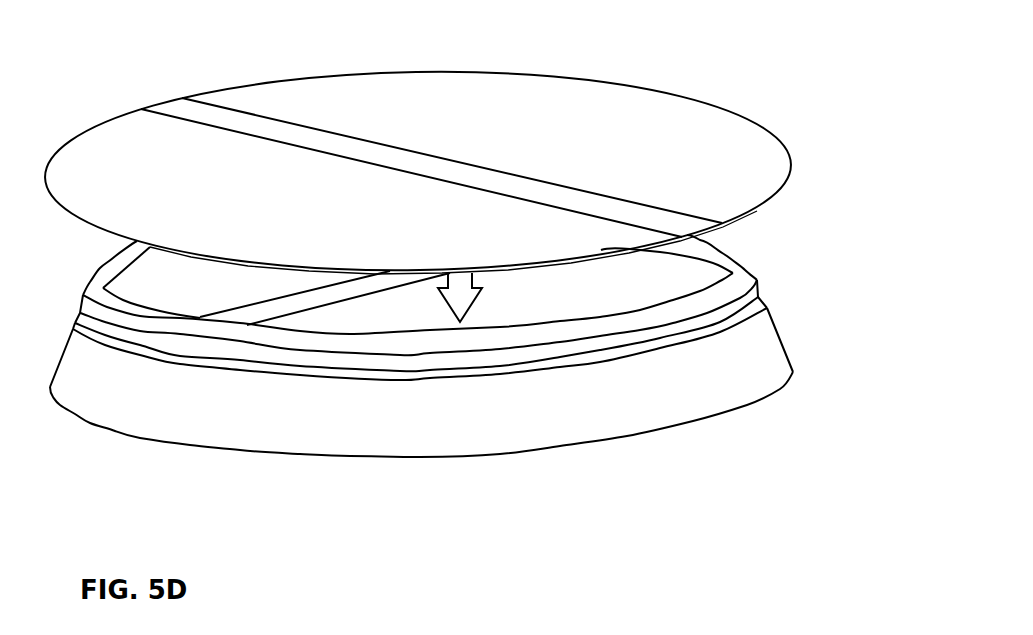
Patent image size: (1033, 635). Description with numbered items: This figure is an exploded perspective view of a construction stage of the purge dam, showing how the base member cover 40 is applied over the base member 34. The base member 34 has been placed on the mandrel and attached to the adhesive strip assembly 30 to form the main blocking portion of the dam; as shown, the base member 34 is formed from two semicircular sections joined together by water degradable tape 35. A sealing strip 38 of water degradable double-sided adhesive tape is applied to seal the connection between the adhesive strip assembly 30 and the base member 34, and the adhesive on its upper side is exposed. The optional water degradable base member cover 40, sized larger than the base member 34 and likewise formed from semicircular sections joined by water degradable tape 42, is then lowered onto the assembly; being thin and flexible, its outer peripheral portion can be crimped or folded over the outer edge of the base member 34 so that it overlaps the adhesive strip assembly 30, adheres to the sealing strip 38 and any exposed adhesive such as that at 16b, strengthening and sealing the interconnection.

The adhesive strip assembly 30 is at (700, 403).
The base member 34 is at (105, 262).
The water degradable tape 35 is at (268, 305).
The sealing strip 38 is at (748, 272).
The base member cover 40 is at (603, 93).
The water degradable tape 42 is at (178, 110).
The sealing ring 16b is at (357, 372).